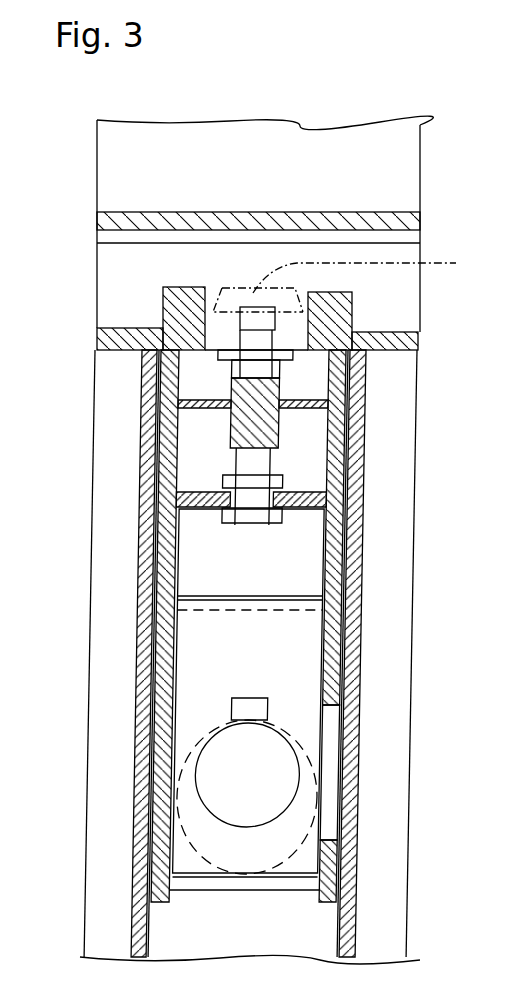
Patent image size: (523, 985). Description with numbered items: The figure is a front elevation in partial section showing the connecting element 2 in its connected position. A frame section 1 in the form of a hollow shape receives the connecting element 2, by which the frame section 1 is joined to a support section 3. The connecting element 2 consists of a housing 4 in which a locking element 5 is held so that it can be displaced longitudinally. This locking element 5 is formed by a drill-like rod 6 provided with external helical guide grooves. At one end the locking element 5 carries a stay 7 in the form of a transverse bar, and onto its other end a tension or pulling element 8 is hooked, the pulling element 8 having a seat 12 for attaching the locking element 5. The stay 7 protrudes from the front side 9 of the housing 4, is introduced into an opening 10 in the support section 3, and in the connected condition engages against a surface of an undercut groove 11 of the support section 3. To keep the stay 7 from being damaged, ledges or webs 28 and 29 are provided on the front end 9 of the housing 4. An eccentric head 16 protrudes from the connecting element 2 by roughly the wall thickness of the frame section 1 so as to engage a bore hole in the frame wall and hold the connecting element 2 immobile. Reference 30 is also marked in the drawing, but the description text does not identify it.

The frame section 1 is at (147, 512).
The connecting element 2 is at (156, 578).
The support section 3 is at (100, 336).
The housing 4 is at (167, 645).
The locking element 5 is at (300, 385).
The drill-like rod 6 is at (273, 432).
The stay 7 is at (262, 320).
The pulling element 8 is at (232, 710).
The front side 9 is at (350, 322).
The opening 10 is at (176, 338).
The undercut groove 11 is at (112, 254).
The seat 12 is at (210, 492).
The eccentric head 16 is at (272, 775).
The ledge 28 is at (177, 300).
The ledge 29 is at (353, 300).
The nut 30 is at (270, 463).